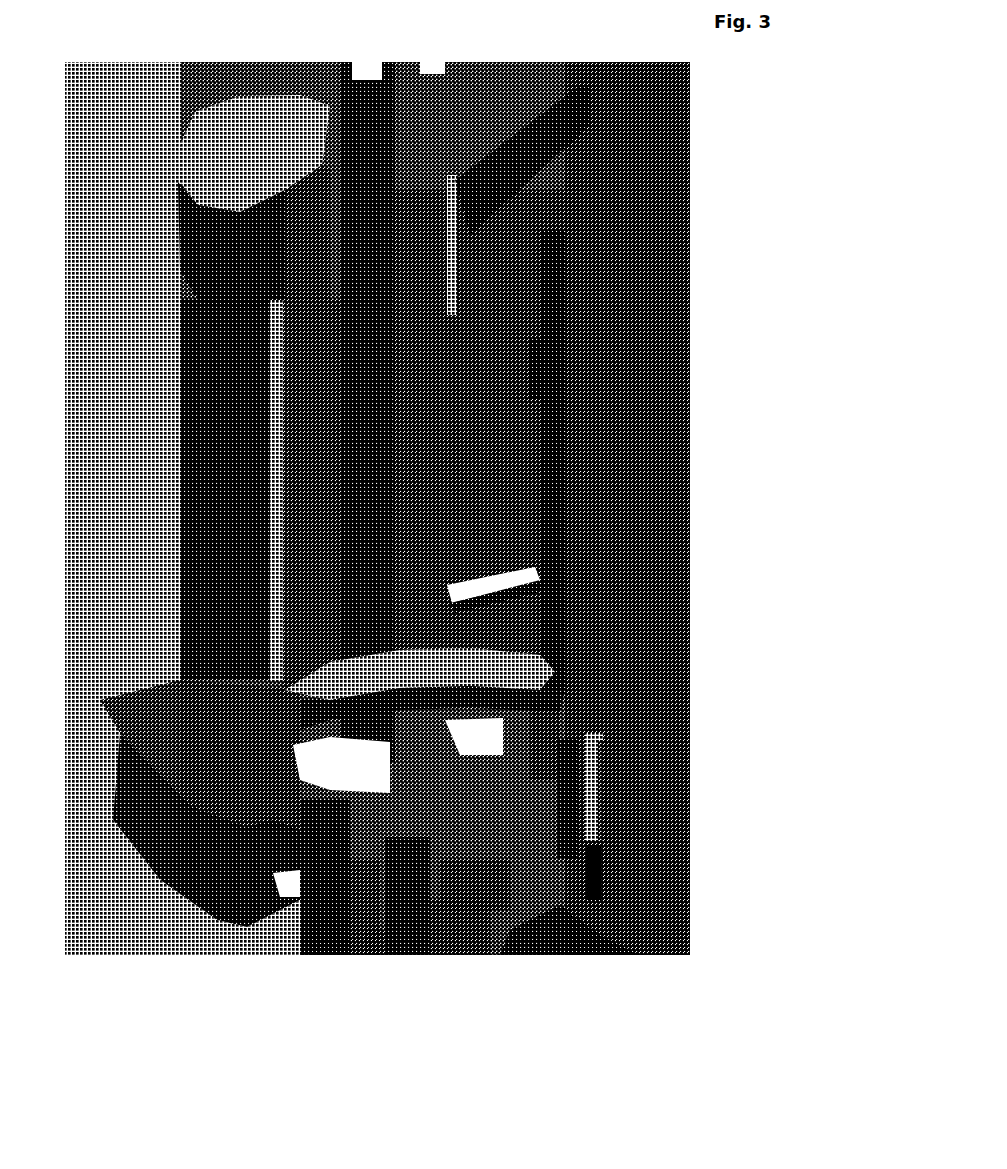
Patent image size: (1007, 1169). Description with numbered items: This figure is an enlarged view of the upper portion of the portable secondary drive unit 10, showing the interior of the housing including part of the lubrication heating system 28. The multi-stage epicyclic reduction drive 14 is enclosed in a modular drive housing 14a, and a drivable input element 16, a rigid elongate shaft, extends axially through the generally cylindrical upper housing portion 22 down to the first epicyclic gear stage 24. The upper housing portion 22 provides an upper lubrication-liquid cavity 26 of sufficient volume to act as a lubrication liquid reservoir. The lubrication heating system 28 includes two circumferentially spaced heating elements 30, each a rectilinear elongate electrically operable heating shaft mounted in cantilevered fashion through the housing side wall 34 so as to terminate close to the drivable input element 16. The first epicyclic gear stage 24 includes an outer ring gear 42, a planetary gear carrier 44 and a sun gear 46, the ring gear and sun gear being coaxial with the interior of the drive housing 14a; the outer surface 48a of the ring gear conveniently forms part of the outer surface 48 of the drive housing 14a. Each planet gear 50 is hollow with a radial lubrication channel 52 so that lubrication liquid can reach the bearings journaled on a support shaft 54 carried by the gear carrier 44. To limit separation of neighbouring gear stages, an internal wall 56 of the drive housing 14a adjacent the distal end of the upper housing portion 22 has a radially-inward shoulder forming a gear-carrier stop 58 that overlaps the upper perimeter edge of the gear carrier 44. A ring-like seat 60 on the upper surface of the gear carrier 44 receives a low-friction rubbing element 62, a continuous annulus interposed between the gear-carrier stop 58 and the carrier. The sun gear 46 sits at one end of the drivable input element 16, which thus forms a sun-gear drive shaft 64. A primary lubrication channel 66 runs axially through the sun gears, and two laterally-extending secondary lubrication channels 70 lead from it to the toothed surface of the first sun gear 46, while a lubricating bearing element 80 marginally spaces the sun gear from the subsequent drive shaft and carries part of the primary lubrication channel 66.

The portable secondary drive unit 10 is at (622, 133).
The multi-stage epicyclic reduction drive 14 is at (280, 868).
The drive housing 14a is at (568, 420).
The drivable input element 16 is at (405, 505).
The upper housing portion 22 is at (524, 312).
The first epicyclic gear stage 24 is at (591, 765).
The upper lubrication-liquid cavity 26 is at (340, 418).
The lubrication heating system 28 is at (581, 567).
The heating element 30 is at (511, 580).
The housing side wall 34 is at (280, 563).
The outer ring gear 42 is at (606, 802).
The planetary gear carrier 44 is at (548, 772).
The sun gear 46 is at (458, 894).
The outer surface of the drive housing 48 is at (210, 655).
The outer surface of the ring gear 48a is at (190, 940).
The planet gear 50 is at (378, 951).
The radial lubrication channel 52 is at (373, 909).
The support shaft 54 is at (330, 931).
The internal wall 56 is at (538, 366).
The gear-carrier stop 58 is at (551, 682).
The ring-like seat 60 is at (548, 709).
The low-friction rubbing element 62 is at (369, 689).
The sun-gear drive shaft 64 is at (402, 737).
The primary lubrication channel 66 is at (427, 870).
The secondary lubrication channel 70 is at (407, 863).
The lubricating bearing element 80 is at (440, 946).